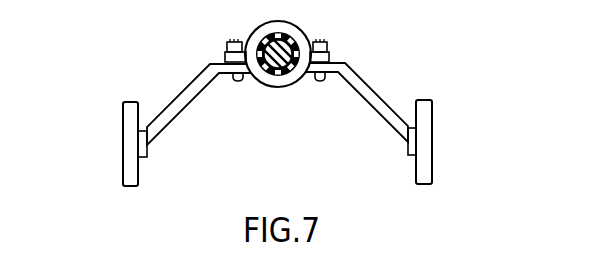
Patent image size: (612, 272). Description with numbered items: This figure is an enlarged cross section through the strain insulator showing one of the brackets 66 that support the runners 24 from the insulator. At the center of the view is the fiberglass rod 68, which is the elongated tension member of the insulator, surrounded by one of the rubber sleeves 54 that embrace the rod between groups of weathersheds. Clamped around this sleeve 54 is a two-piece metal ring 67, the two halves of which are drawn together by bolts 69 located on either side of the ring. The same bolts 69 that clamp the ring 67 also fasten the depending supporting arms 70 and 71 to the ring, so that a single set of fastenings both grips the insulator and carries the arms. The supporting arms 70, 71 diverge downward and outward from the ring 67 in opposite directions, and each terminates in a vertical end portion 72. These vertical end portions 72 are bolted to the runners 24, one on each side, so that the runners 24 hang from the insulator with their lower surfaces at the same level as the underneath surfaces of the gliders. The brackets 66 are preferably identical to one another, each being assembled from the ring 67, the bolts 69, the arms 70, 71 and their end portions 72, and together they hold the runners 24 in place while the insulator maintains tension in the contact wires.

The runners 24 is at (447, 148).
The sleeves 54 is at (287, 74).
The brackets 66 is at (360, 52).
The two-piece metal ring 67 is at (290, 32).
The fiberglass rod 68 is at (276, 33).
The bolts 69 is at (229, 81).
The supporting arm 70 is at (183, 92).
The supporting arm 71 is at (373, 93).
The vertical end portions 72 is at (146, 150).